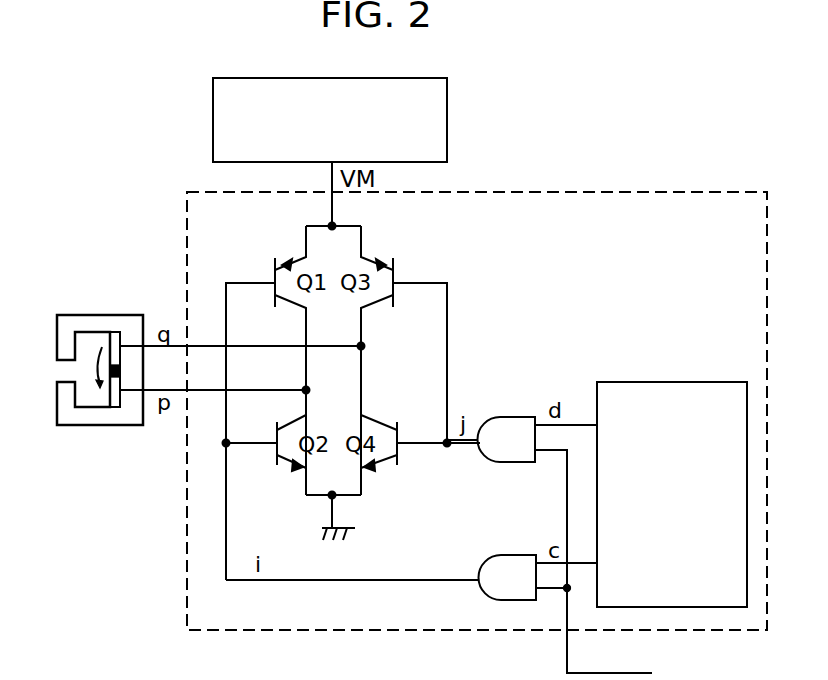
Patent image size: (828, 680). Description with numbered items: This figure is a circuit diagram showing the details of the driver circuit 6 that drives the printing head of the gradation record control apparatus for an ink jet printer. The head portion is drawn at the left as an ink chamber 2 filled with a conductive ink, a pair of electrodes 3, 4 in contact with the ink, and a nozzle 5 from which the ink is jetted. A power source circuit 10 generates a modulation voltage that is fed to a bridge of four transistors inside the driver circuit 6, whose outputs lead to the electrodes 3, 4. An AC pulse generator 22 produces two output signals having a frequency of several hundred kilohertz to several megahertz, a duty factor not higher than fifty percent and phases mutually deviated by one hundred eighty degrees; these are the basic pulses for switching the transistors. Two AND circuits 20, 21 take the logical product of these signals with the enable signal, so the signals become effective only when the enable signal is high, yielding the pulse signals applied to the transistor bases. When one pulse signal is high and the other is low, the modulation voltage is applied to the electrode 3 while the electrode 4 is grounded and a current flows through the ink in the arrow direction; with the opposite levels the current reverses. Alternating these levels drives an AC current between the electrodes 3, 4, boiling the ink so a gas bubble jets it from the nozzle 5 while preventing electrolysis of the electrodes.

The ink chamber 2 is at (82, 333).
The electrode 3 is at (113, 333).
The electrode 4 is at (115, 407).
The nozzle 5 is at (72, 372).
The driver circuit 6 is at (637, 192).
The power source circuit 10 is at (447, 115).
The AND circuit 20 is at (507, 554).
The AND circuit 21 is at (507, 415).
The AC pulse generator 22 is at (668, 382).